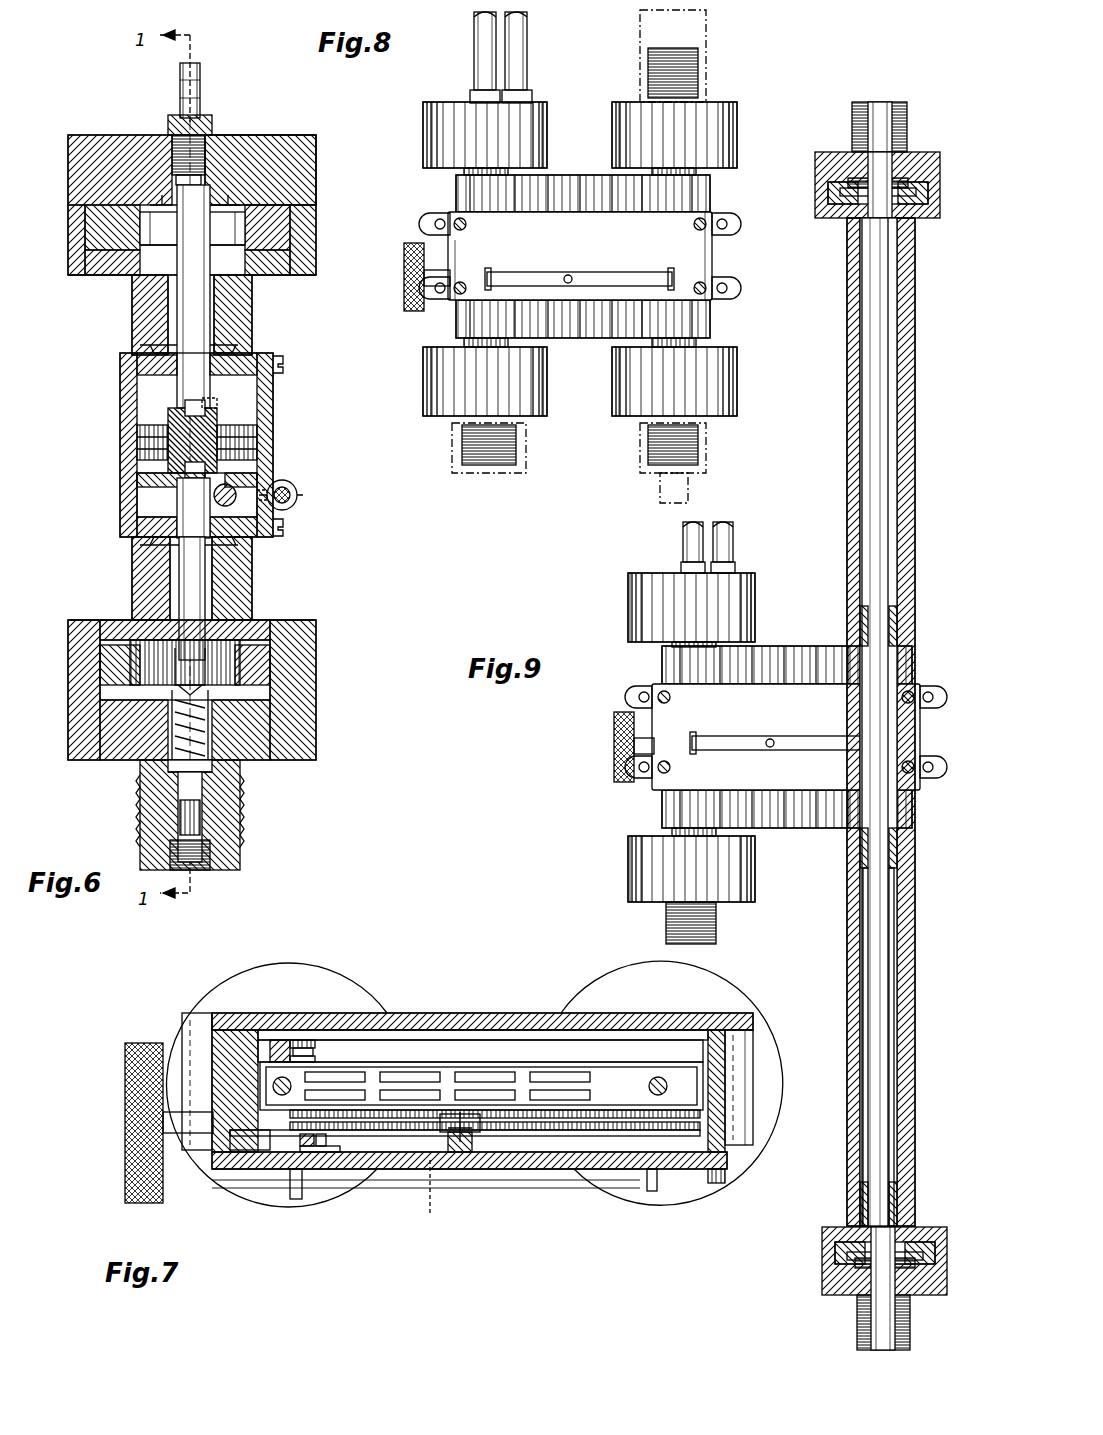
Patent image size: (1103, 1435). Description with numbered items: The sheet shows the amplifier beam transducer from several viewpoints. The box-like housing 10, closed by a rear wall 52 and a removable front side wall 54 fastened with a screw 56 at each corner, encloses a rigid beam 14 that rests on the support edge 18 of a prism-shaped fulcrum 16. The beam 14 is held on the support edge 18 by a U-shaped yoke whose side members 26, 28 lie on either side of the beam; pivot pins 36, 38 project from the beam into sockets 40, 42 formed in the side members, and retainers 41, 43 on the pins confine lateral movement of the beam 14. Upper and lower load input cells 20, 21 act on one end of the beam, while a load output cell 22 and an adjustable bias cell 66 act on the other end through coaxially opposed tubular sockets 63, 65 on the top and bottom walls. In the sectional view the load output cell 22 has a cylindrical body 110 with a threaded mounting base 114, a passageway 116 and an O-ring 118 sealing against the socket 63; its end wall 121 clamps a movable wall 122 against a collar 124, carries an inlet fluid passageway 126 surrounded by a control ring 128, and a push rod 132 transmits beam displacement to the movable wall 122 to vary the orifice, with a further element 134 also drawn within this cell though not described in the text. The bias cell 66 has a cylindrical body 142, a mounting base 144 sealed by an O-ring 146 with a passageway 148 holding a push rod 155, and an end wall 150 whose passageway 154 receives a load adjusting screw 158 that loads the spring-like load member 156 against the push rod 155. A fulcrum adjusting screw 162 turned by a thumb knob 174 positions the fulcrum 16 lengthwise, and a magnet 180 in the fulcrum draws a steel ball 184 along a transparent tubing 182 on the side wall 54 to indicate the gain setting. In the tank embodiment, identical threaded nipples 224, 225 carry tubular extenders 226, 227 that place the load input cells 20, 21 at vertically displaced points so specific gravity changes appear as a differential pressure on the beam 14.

In FIG. 8, the housing 10 is at (722, 265).
In FIG. 6, the beam 14 is at (250, 420).
In FIG. 7, the beam 14 is at (405, 1067).
In FIG. 6, the fulcrum 16 is at (150, 502).
In FIG. 6, the support edge 18 is at (150, 480).
In FIG. 8, the upper load input cell 20 is at (742, 132).
In FIG. 9, the upper load input cell 20 is at (922, 140).
In FIG. 8, the lower load input cell 21 is at (742, 392).
In FIG. 9, the lower load input cell 21 is at (948, 1228).
In FIG. 7, the lower load input cell 21 is at (615, 965).
In FIG. 6, the load output cell 22 is at (100, 282).
In FIG. 8, the load output cell 22 is at (420, 130).
In FIG. 9, the load output cell 22 is at (626, 602).
In FIG. 6, the side member 26 is at (240, 437).
In FIG. 7, the side member 26 is at (540, 1124).
In FIG. 6, the side member 28 is at (150, 427).
In FIG. 7, the side member 28 is at (505, 1050).
In FIG. 7, the pivot pin 36 is at (306, 1148).
In FIG. 7, the pivot pin 38 is at (303, 1048).
In FIG. 7, the socket 40 is at (300, 1150).
In FIG. 7, the retainer 41 is at (320, 1148).
In FIG. 7, the socket 42 is at (290, 1040).
In FIG. 7, the retainer 43 is at (315, 1052).
In FIG. 7, the rear wall 52 is at (470, 1013).
In FIG. 8, the removable front side wall 54 is at (465, 240).
In FIG. 9, the removable front side wall 54 is at (665, 710).
In FIG. 6, the screw 56 is at (280, 355).
In FIG. 6, the tubular socket 63 is at (138, 310).
In FIG. 6, the tubular socket 65 is at (140, 570).
In FIG. 6, the bias cell 66 is at (68, 718).
In FIG. 8, the bias cell 66 is at (420, 390).
In FIG. 9, the bias cell 66 is at (626, 850).
In FIG. 7, the bias cell 66 is at (325, 962).
In FIG. 6, the cylindrical body 110 is at (75, 152).
In FIG. 6, the mounting base 114 is at (140, 345).
In FIG. 6, the passageway 116 is at (150, 333).
In FIG. 6, the O-ring 118 is at (135, 352).
In FIG. 6, the end wall 121 is at (262, 150).
In FIG. 6, the movable wall 122 is at (98, 195).
In FIG. 6, the collar 124 is at (200, 80).
In FIG. 6, the inlet fluid passageway 126 is at (172, 160).
In FIG. 6, the control ring 128 is at (165, 200).
In FIG. 6, the push rod 132 is at (110, 262).
In FIG. 6, the disc 134 is at (175, 262).
In FIG. 6, the cylindrical body 142 is at (85, 680).
In FIG. 6, the mounting base 144 is at (150, 580).
In FIG. 6, the O-ring 146 is at (148, 543).
In FIG. 6, the passageway 148 is at (112, 640).
In FIG. 6, the end wall 150 is at (130, 755).
In FIG. 6, the passageway 154 is at (242, 767).
In FIG. 6, the push rod 155 is at (180, 660).
In FIG. 6, the load member 156 is at (215, 780).
In FIG. 6, the load adjusting screw 158 is at (215, 803).
In FIG. 7, the fulcrum adjusting screw 162 is at (375, 1160).
In FIG. 8, the thumb knob 174 is at (408, 276).
In FIG. 9, the thumb knob 174 is at (616, 742).
In FIG. 7, the thumb knob 174 is at (133, 1112).
In FIG. 7, the magnet 180 is at (428, 1198).
In FIG. 6, the transparent plastic tubing 182 is at (293, 485).
In FIG. 7, the transparent plastic tubing 182 is at (480, 1160).
In FIG. 6, the steel ball 184 is at (301, 503).
In FIG. 7, the steel ball 184 is at (462, 1152).
In FIG. 9, the threaded nipple 224 is at (862, 625).
In FIG. 9, the threaded nipple 225 is at (862, 845).
In FIG. 9, the tubular extender 226 is at (850, 455).
In FIG. 9, the tubular extender 227 is at (860, 905).